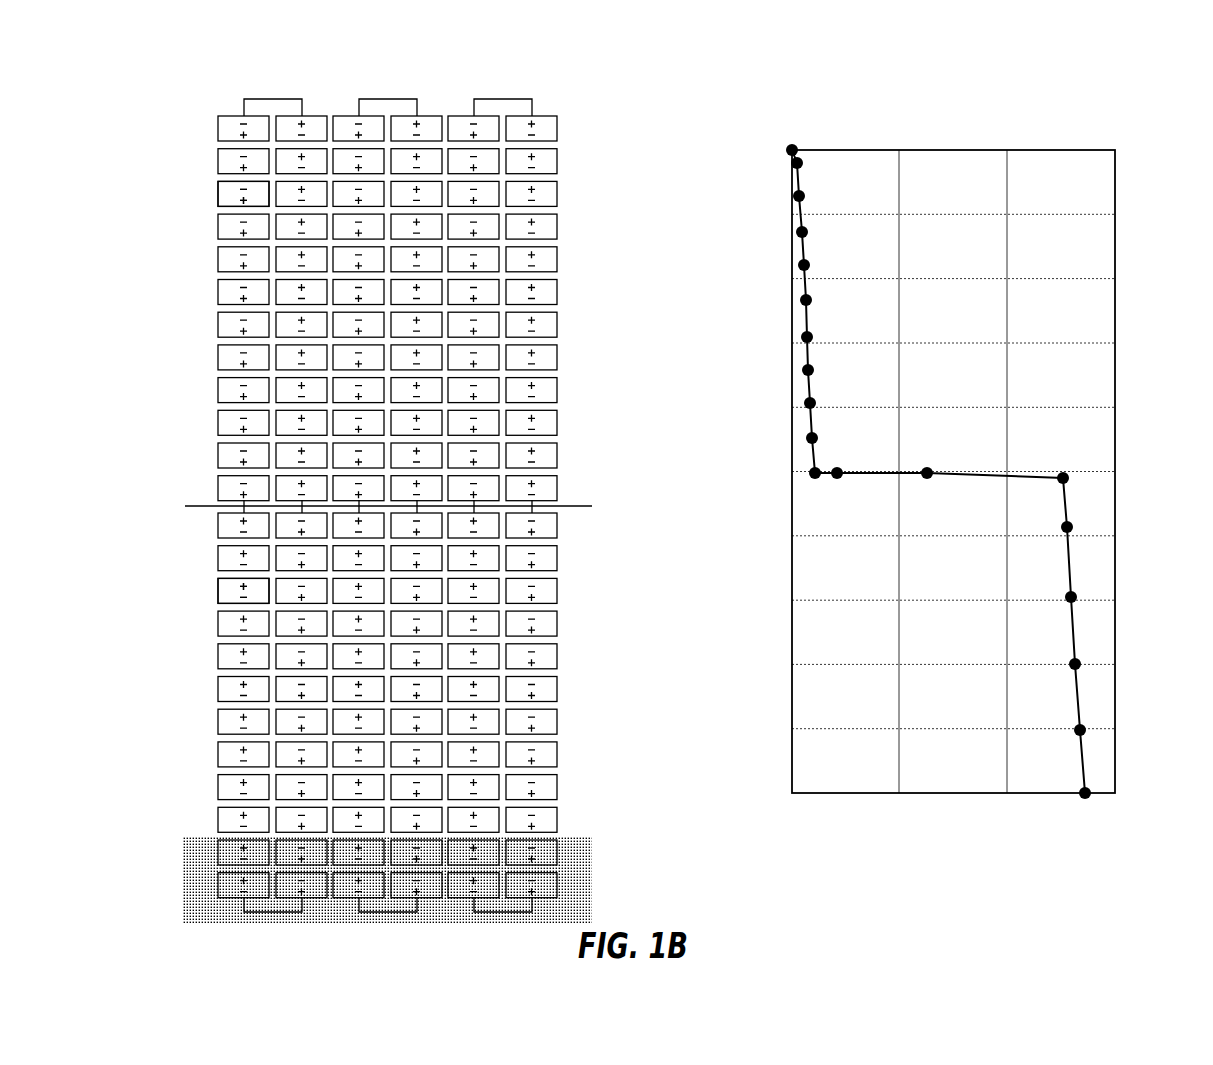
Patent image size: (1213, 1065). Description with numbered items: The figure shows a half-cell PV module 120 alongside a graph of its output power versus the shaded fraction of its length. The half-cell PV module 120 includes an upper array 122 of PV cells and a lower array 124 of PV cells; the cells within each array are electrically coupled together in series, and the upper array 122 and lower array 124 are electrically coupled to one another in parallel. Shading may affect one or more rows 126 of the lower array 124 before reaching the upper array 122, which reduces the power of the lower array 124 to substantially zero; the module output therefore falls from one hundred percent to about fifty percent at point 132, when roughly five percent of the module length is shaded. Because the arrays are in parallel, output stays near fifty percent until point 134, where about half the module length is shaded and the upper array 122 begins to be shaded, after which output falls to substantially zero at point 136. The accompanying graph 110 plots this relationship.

The output power vs shaded length graph for half-cell module 110 is at (1117, 233).
The half-cell PV module 120 is at (175, 82).
The upper array 122 is at (228, 192).
The lower array 124 is at (226, 592).
The rows 126 is at (190, 880).
The point 132 is at (817, 470).
The point 134 is at (1066, 477).
The point 136 is at (1088, 792).